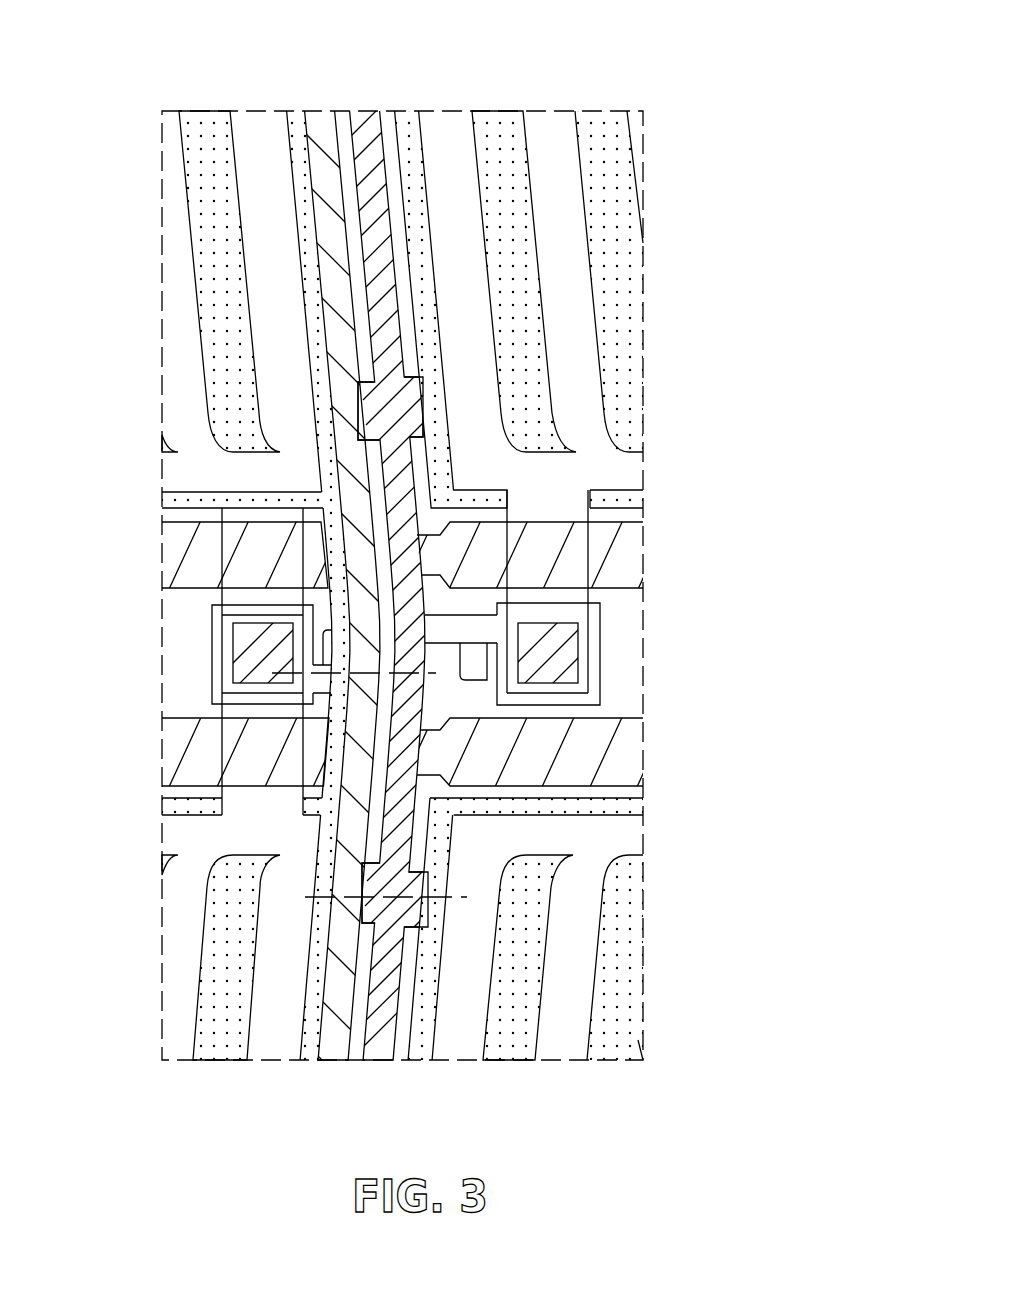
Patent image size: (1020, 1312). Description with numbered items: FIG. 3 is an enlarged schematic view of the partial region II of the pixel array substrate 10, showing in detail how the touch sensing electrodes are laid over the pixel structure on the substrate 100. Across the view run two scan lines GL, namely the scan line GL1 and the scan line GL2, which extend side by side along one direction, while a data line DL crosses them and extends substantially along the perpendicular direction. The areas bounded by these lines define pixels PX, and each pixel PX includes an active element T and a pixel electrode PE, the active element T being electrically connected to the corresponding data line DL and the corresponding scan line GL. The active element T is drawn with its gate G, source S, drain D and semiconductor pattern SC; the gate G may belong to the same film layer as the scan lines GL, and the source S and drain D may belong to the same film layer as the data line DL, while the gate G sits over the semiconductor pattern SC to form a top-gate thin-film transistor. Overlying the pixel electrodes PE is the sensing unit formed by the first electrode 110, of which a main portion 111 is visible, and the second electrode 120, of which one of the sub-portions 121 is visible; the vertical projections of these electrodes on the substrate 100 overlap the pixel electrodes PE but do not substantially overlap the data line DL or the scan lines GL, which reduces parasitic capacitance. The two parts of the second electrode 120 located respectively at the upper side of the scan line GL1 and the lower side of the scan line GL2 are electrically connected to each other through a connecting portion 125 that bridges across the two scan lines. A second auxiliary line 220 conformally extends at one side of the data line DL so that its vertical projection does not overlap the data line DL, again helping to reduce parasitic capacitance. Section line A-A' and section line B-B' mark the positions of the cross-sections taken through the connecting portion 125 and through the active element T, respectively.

The pixel array substrate 10 is at (435, 557).
The substrate 100 is at (185, 653).
The first electrode 110 is at (579, 534).
The main portion 111 is at (390, 133).
The second electrode 120 is at (211, 585).
The sub-portion 121 is at (183, 807).
The connecting portion 125 is at (343, 598).
The second auxiliary line 220 is at (318, 127).
The data line DL is at (363, 130).
The scan line GL is at (375, 652).
The scan line GL1 is at (215, 556).
The scan line GL2 is at (200, 748).
The pixel electrode PE is at (600, 355).
The pixel PX is at (481, 585).
The active element T is at (481, 652).
The source S is at (405, 405).
The drain D is at (600, 617).
The gate G is at (477, 667).
The semiconductor pattern SC is at (553, 650).
The partial region II is at (158, 162).
The section line A-A' A is at (355, 670).
The section line B-B' B is at (388, 898).